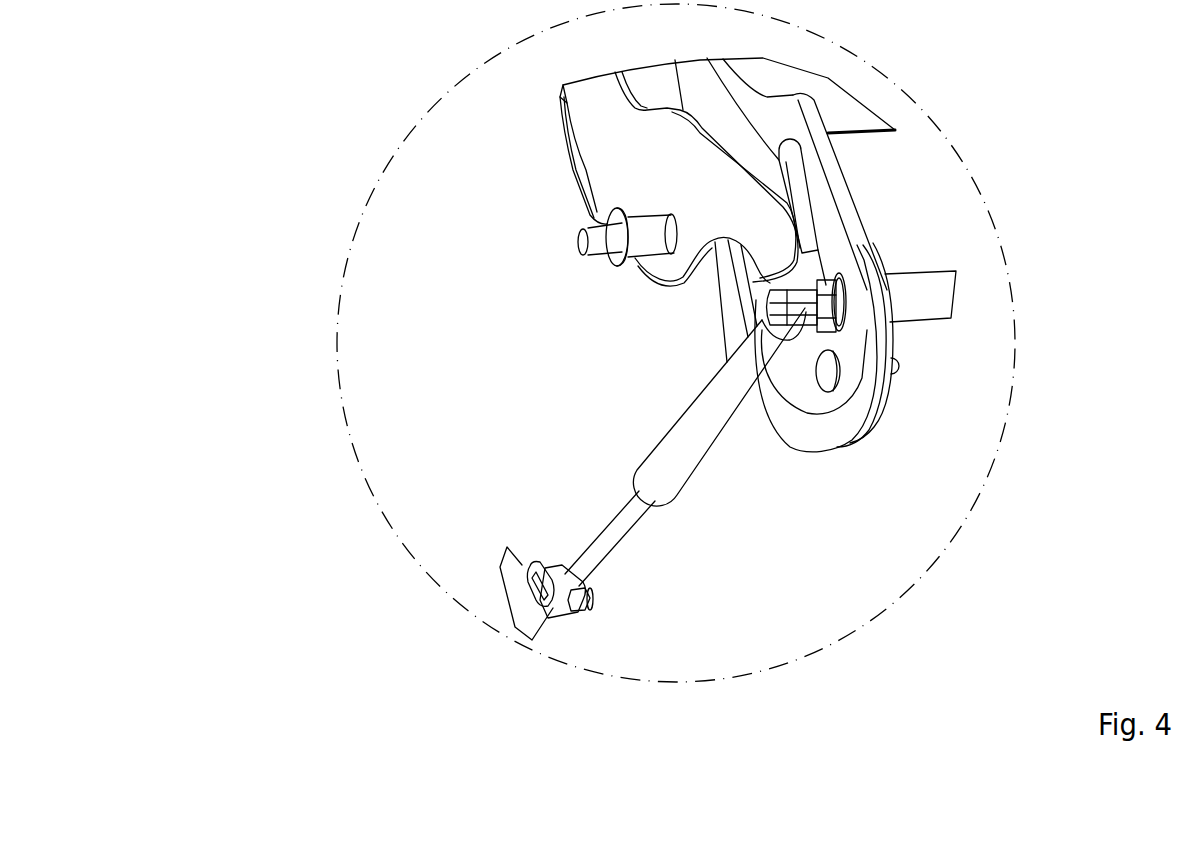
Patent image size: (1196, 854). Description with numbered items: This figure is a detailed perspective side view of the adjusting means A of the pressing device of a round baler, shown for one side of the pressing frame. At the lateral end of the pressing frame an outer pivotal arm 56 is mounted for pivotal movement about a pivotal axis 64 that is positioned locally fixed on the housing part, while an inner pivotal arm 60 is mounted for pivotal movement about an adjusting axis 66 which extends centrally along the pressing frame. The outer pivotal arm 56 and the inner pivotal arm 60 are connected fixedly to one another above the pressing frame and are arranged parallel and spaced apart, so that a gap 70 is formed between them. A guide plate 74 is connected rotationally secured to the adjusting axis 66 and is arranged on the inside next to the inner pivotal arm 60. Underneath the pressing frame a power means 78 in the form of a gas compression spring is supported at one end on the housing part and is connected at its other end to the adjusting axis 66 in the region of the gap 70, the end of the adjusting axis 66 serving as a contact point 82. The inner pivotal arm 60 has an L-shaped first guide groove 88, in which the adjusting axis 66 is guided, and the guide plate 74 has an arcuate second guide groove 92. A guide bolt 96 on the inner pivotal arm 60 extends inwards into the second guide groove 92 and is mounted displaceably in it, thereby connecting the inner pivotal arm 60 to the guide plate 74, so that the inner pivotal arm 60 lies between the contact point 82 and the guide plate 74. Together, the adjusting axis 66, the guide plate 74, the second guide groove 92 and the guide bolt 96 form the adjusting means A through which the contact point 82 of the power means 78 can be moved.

The adjusting means A is at (387, 520).
The outer pivotal arm 56 is at (627, 153).
The inner pivotal arm 60 is at (820, 190).
The pivotal axis 64 is at (583, 240).
The adjusting axis 66 is at (910, 292).
The gap 70 is at (663, 88).
The guide plate 74 is at (832, 430).
The power means 78 is at (662, 472).
The contact point 82 is at (809, 338).
The first guide groove 88 is at (792, 156).
The second guide groove 92 is at (753, 300).
The guide bolt 96 is at (830, 370).